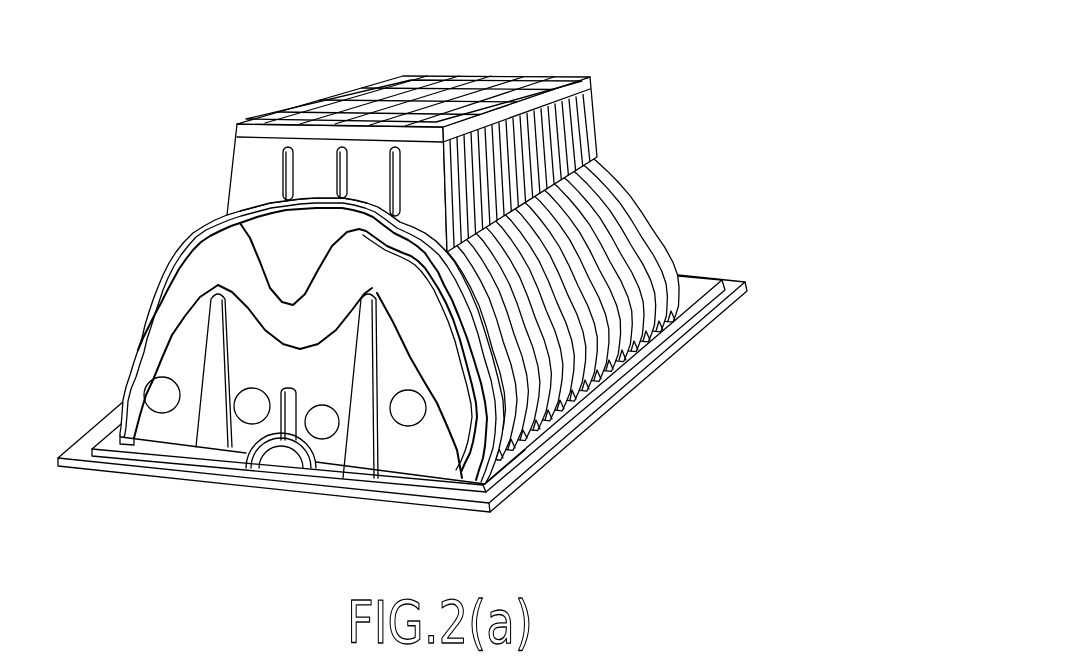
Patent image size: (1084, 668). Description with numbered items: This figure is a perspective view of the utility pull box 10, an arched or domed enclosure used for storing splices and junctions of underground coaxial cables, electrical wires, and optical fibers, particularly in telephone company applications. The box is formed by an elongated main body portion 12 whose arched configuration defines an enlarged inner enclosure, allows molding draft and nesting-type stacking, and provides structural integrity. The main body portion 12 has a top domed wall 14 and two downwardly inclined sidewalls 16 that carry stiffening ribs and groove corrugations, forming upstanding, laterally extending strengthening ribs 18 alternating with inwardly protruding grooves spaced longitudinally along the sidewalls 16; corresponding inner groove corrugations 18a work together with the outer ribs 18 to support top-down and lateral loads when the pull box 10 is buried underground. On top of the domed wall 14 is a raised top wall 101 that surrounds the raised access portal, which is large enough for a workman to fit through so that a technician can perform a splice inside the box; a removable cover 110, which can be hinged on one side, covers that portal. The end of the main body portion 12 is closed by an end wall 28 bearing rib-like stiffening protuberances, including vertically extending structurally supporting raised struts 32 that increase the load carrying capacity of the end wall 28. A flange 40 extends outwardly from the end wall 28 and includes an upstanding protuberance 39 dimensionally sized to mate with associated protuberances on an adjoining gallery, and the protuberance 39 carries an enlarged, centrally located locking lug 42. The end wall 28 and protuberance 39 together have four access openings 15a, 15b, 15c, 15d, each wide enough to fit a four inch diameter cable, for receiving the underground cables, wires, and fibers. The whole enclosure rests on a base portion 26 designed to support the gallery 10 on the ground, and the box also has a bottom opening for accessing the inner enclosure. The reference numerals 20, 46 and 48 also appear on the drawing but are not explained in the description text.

The utility pull box 10 is at (406, 292).
The elongated main body portion 12 is at (233, 197).
The top domed wall 14 is at (265, 212).
The downwardly inclined sidewalls 16 is at (606, 233).
The strengthening ribs 18 is at (662, 268).
The inner groove corrugations 18a is at (680, 306).
The base corner 20 is at (500, 470).
The base portion 26 is at (600, 408).
The end wall 28 is at (275, 262).
The raised struts 32 is at (210, 328).
The protuberance 39 is at (178, 440).
The flange 40 is at (63, 467).
The locking lug 42 is at (313, 466).
The tunnel opening 46 is at (277, 455).
The post 48 is at (276, 418).
The access opening 15a is at (142, 389).
The access opening 15b is at (240, 400).
The access opening 15c is at (383, 437).
The access opening 15d is at (423, 417).
The raised top wall 101 is at (594, 134).
The removable cover 110 is at (590, 76).